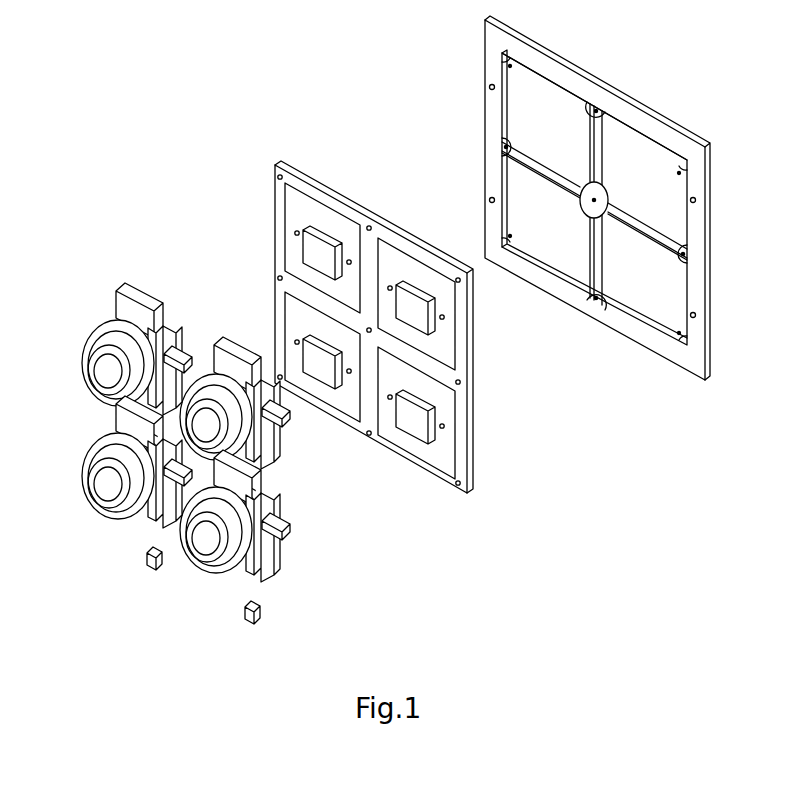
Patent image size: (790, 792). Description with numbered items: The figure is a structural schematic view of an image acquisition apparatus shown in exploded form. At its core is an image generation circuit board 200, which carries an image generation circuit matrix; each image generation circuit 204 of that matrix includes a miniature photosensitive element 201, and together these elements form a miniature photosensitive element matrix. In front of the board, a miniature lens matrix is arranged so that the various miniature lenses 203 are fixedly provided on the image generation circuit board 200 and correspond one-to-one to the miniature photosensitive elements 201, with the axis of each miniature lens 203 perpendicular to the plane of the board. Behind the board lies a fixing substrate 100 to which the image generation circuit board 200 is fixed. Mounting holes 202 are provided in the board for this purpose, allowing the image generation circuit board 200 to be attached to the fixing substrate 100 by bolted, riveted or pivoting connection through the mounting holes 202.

The fixing substrate 100 is at (587, 97).
The image generation circuit board 200 is at (302, 256).
The miniature photosensitive element 201 is at (307, 238).
The mounting hole 202 is at (458, 277).
The miniature lens 203 is at (104, 360).
The image generation circuit 204 is at (290, 328).